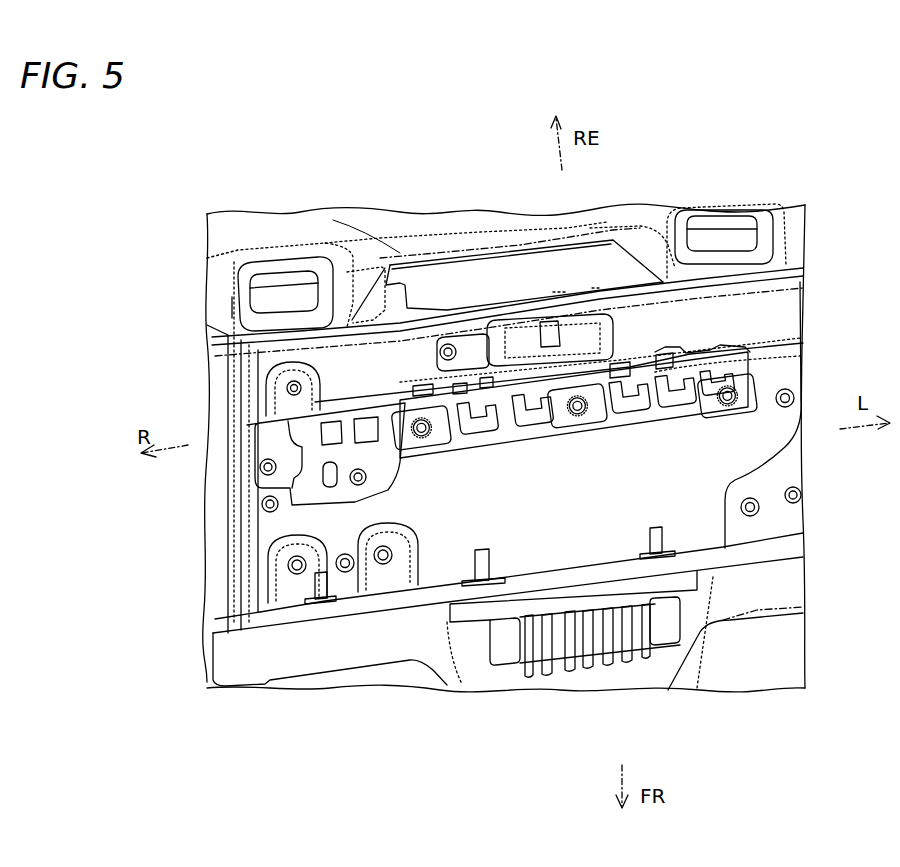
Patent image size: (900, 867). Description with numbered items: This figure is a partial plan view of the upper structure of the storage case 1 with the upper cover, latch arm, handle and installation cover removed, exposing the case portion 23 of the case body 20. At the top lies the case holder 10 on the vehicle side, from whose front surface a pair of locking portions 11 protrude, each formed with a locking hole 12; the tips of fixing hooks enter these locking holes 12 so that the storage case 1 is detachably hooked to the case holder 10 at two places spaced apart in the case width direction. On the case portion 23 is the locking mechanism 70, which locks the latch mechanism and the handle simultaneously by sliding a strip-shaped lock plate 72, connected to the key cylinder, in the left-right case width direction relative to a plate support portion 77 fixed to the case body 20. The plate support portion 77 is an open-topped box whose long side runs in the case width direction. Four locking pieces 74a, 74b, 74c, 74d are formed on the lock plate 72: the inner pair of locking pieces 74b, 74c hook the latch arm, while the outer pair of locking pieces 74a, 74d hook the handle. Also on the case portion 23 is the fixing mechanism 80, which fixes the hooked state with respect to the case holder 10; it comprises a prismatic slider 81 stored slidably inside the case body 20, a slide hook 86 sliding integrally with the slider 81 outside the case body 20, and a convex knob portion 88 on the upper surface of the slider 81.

The storage case 1 is at (209, 697).
The case holder 10 is at (508, 232).
The locking portion 11 is at (225, 310).
The locking hole 12 is at (273, 268).
The case body 20 is at (218, 536).
The case portion 23 is at (780, 425).
The locking mechanism 70 is at (262, 410).
The lock plate 72 is at (656, 431).
The locking piece 74a is at (447, 378).
The locking piece 74b is at (517, 375).
The locking piece 74c is at (623, 365).
The locking piece 74d is at (663, 365).
The plate support portion 77 is at (717, 421).
The fixing mechanism 80 is at (486, 294).
The slider 81 is at (793, 323).
The slide hook 86 is at (592, 288).
The knob portion 88 is at (559, 292).